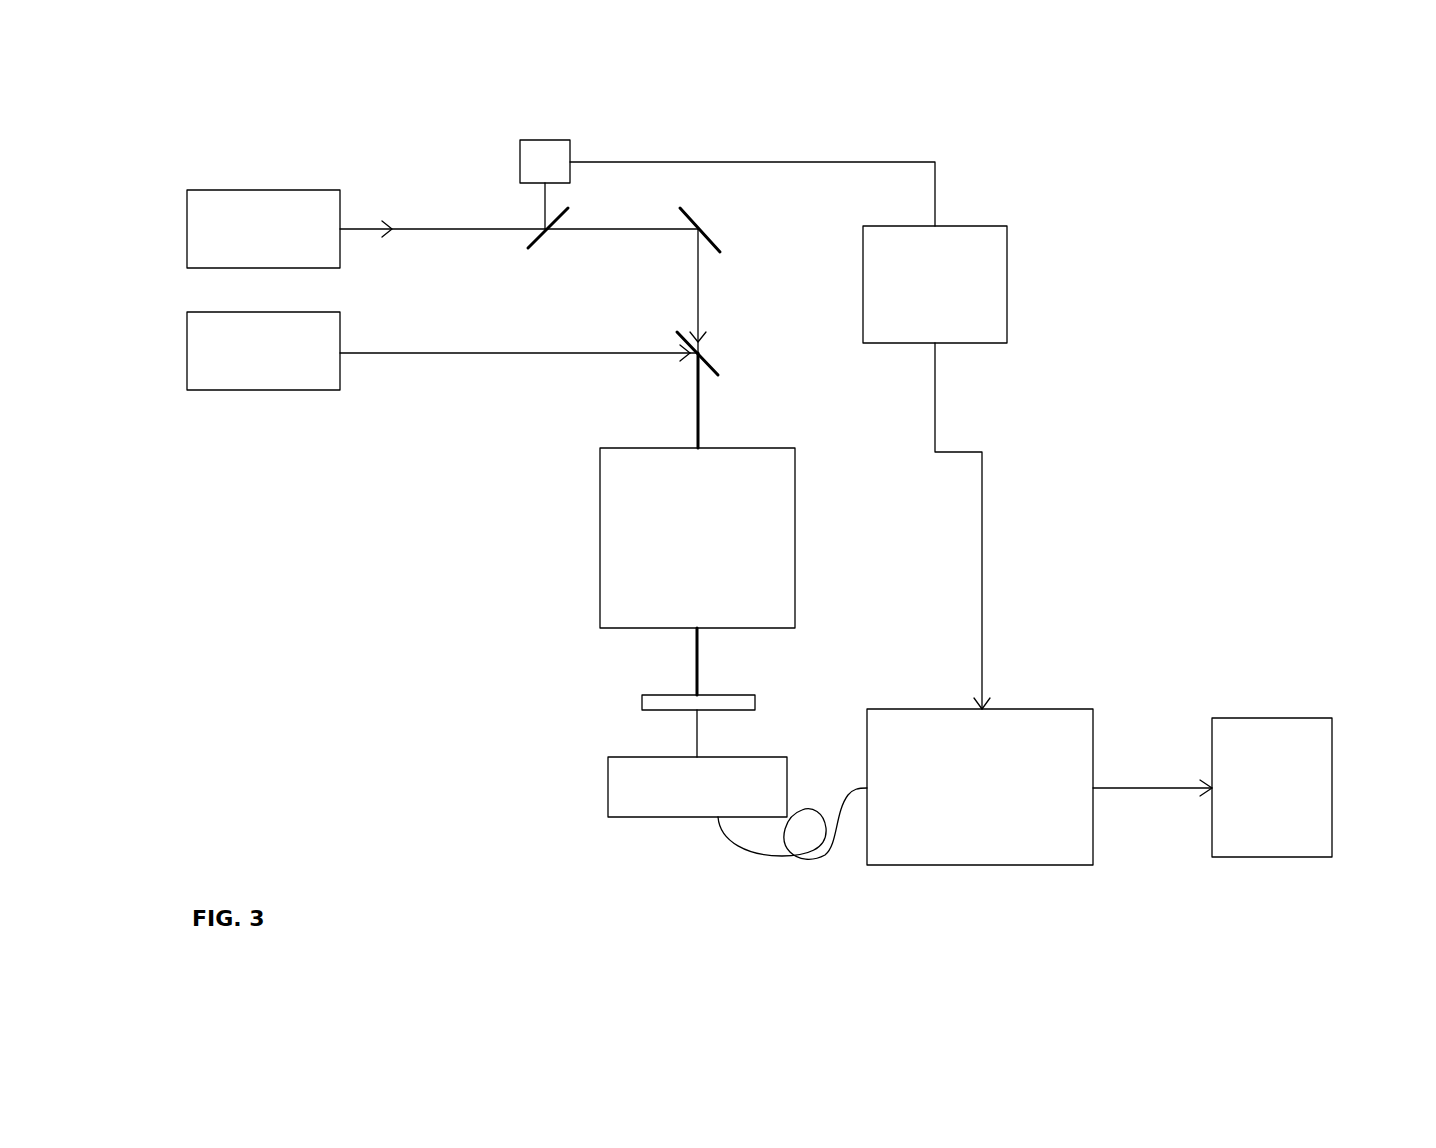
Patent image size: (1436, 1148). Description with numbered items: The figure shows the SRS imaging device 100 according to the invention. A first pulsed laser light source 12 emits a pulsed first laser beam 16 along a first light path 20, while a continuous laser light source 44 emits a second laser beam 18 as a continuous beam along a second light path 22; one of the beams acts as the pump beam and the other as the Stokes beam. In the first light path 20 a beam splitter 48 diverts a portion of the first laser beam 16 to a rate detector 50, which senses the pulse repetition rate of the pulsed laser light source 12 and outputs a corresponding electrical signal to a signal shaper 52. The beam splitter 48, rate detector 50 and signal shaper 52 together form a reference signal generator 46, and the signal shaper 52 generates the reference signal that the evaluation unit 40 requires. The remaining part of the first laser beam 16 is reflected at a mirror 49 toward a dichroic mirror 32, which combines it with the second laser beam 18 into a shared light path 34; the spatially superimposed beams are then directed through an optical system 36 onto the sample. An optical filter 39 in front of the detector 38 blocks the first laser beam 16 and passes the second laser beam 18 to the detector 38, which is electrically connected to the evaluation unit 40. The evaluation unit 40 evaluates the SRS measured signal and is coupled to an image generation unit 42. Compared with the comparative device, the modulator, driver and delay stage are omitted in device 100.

The first pulsed laser light source 12 is at (262, 188).
The continuous laser light source 44 is at (262, 392).
The first laser beam 16 is at (392, 222).
The first light path 20 is at (462, 232).
The second light path 22 is at (490, 355).
The rate detector 50 is at (520, 155).
The beam splitter 48 is at (535, 252).
The mirror 49 is at (712, 232).
The reference signal generator 46 is at (698, 138).
The signal shaper 52 is at (1008, 268).
The dichroic mirror 32 is at (712, 358).
The second laser beam 18 is at (681, 360).
The shared light path 34 is at (700, 418).
The optical system 36 is at (600, 545).
The optical filter 39 is at (642, 703).
The detector 38 is at (608, 777).
The evaluation unit 40 is at (1095, 752).
The image generation unit 42 is at (1333, 752).
The device 100 is at (1270, 165).